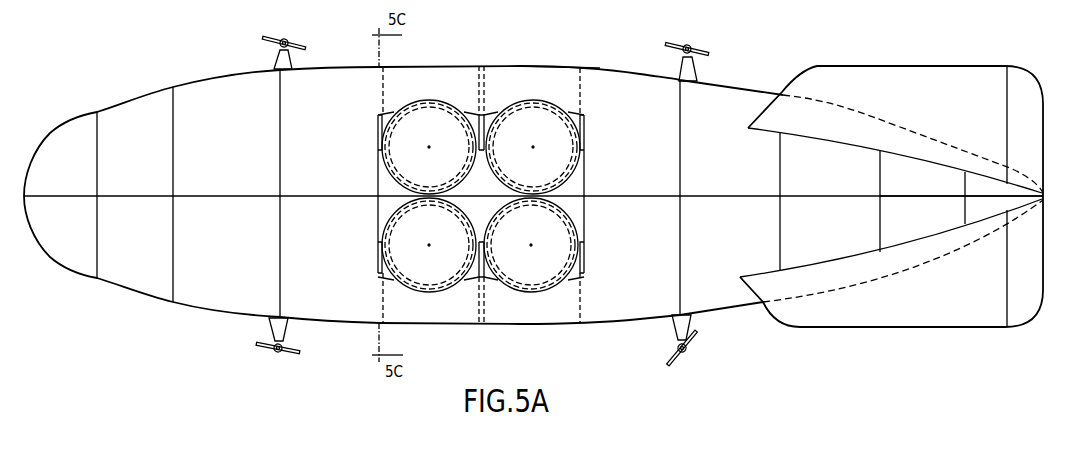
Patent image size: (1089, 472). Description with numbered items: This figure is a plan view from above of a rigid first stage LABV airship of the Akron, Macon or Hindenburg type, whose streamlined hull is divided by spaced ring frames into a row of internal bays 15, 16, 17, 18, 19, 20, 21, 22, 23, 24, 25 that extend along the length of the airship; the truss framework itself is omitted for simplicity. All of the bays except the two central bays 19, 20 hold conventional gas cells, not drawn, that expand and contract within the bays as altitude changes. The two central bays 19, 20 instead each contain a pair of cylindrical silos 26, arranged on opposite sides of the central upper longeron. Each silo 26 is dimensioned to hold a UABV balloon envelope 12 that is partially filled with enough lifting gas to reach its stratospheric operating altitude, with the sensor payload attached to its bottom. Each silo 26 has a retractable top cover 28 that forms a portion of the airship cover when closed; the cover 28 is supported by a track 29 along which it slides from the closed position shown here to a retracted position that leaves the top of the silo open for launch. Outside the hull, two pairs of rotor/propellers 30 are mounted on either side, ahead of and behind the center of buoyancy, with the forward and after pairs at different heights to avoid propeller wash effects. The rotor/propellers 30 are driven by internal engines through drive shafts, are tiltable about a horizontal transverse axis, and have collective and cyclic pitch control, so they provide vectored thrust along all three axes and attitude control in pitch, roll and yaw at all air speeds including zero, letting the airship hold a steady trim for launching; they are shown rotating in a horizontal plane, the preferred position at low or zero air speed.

The UABV balloon envelope 12 is at (436, 124).
The internal bay 15 is at (78, 233).
The internal bay 16 is at (141, 233).
The internal bay 17 is at (236, 233).
The internal bay 18 is at (333, 233).
The central bay 19 is at (414, 316).
The central bay 20 is at (511, 316).
The internal bay 21 is at (646, 233).
The internal bay 22 is at (736, 233).
The internal bay 23 is at (833, 234).
The internal bay 24 is at (923, 223).
The internal bay 25 is at (991, 218).
The cylindrical silo 26 is at (405, 103).
The retractable top cover 28 is at (543, 83).
The track 29 is at (378, 93).
The rotor/propeller 30 is at (287, 40).